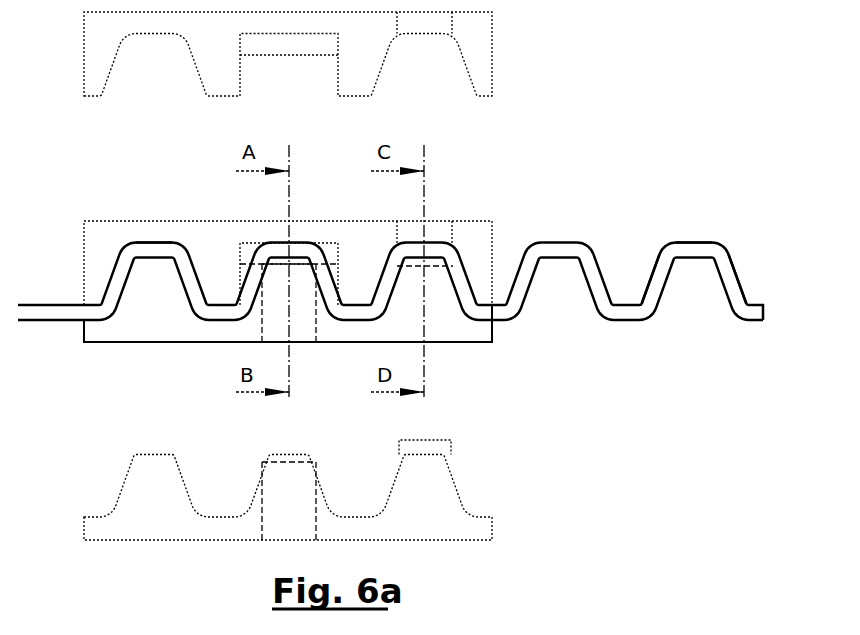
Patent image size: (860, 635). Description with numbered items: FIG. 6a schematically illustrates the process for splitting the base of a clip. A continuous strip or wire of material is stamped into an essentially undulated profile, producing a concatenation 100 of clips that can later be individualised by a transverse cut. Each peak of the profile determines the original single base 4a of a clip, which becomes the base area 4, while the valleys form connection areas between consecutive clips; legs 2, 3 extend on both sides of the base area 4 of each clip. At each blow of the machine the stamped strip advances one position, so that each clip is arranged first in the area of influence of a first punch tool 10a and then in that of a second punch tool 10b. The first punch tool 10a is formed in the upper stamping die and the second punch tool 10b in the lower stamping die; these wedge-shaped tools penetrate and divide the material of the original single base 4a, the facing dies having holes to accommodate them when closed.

The concatenation 100 is at (726, 234).
The leg 2 is at (652, 268).
The leg 3 is at (730, 268).
The base area 4 is at (682, 243).
The original single base 4a is at (143, 243).
The first punch tool 10a is at (288, 50).
The second punch tool 10b is at (428, 440).